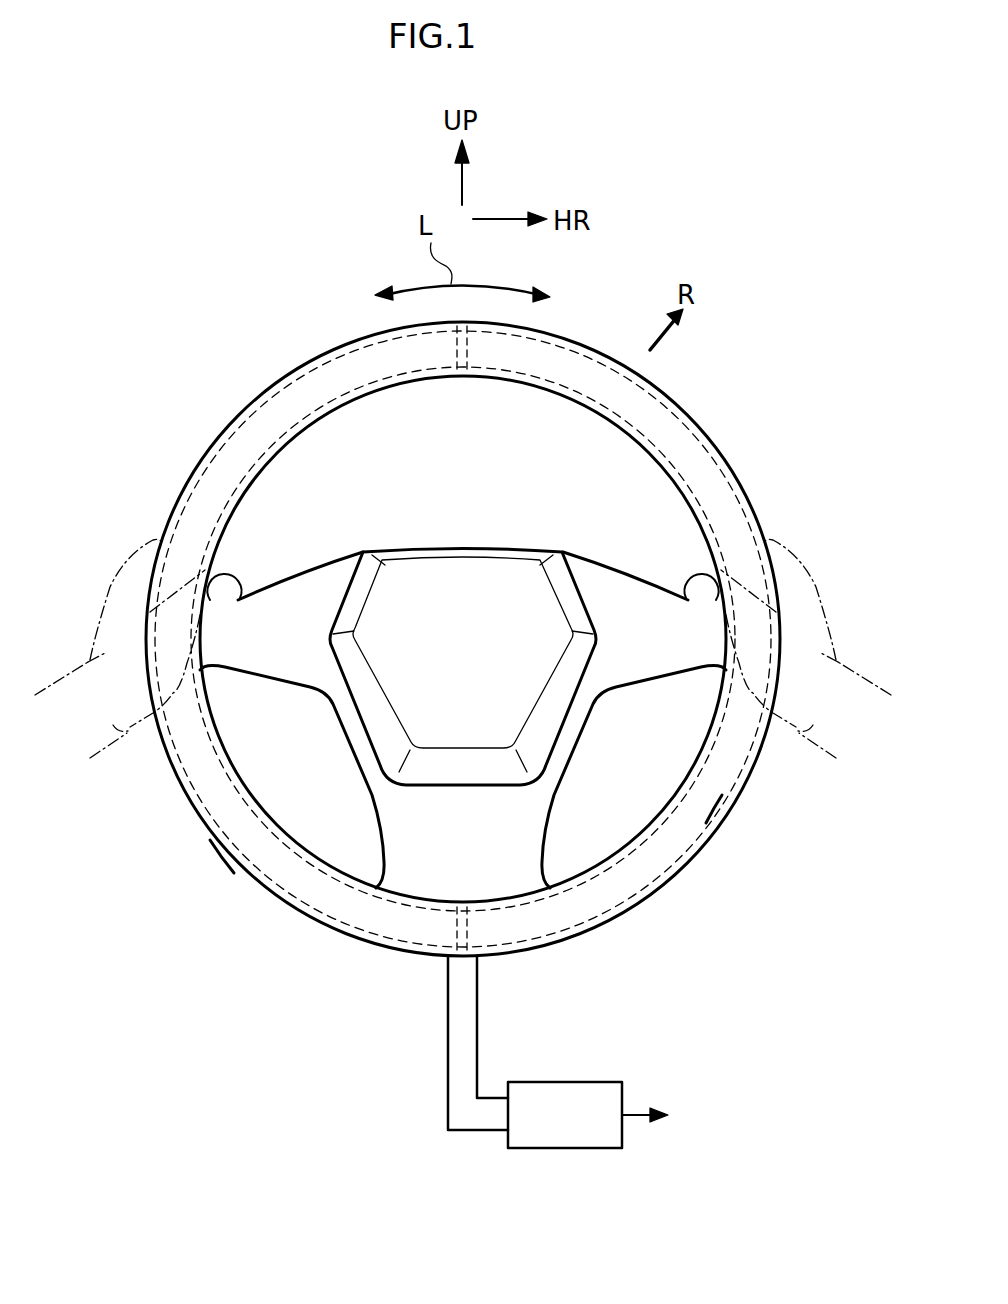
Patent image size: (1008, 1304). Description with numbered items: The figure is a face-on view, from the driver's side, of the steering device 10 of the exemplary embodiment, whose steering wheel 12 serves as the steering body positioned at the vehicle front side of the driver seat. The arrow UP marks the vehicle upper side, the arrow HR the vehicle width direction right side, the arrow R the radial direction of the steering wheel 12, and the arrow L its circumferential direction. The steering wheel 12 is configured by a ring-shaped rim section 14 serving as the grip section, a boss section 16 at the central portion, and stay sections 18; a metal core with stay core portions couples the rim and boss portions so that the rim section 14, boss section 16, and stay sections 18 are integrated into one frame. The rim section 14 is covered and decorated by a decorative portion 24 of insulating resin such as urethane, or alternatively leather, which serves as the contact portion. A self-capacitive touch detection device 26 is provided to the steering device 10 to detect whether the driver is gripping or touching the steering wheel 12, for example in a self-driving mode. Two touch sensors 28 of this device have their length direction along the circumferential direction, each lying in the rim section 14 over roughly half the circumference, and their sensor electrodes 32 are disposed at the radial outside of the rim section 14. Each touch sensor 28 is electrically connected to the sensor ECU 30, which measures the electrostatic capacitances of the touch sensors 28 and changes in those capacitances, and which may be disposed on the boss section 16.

The steering device 10 is at (811, 257).
The steering wheel 12 is at (734, 346).
The rim section 14 is at (686, 410).
The boss section 16 is at (447, 578).
The stay sections 18 is at (293, 605).
The decorative portion 24 is at (572, 397).
The touch detection device 26 is at (682, 1004).
The touch sensors 28 is at (394, 947).
The sensor ECU 30 is at (585, 1082).
The sensor electrodes 32 is at (248, 868).